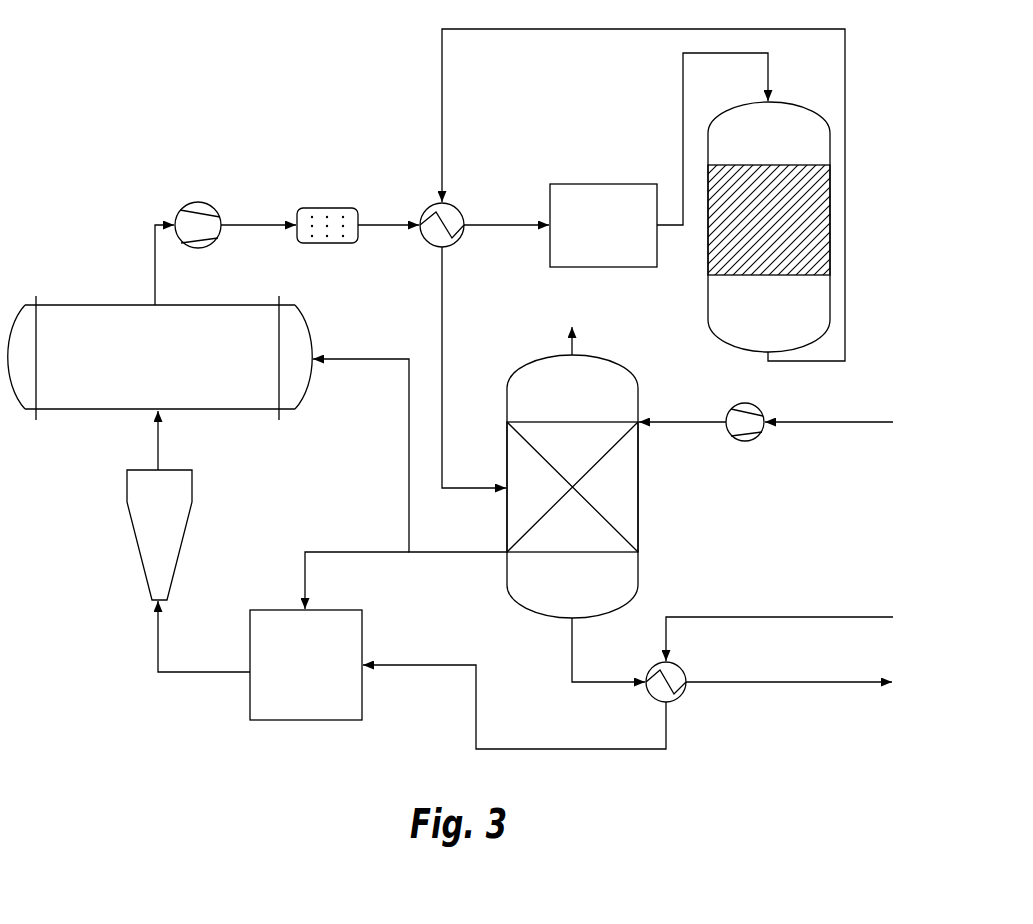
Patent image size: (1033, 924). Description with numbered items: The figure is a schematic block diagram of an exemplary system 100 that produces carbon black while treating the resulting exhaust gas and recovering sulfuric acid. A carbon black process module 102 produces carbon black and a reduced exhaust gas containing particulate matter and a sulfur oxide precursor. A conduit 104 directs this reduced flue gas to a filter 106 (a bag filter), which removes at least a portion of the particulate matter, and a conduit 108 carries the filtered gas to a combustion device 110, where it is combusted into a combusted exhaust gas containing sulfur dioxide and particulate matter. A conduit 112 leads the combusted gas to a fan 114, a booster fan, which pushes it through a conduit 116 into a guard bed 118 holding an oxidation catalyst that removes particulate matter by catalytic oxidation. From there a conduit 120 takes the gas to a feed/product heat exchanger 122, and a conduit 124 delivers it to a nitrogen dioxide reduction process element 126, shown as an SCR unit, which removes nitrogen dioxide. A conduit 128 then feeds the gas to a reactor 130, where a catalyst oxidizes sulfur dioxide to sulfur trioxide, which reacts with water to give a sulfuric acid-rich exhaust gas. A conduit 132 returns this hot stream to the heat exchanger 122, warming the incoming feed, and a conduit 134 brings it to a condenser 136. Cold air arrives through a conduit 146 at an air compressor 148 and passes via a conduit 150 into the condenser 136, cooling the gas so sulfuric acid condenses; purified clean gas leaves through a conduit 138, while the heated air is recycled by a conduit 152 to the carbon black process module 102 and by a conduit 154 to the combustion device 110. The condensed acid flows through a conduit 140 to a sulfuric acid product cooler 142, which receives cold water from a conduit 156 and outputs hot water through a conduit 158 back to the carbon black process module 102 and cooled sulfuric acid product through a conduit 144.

The system 100 is at (146, 64).
The carbon black process module 102 is at (300, 720).
The conduit 104 is at (212, 672).
The filter 106 is at (132, 527).
The conduit 108 is at (155, 440).
The combustion device 110 is at (233, 410).
The conduit 112 is at (155, 268).
The fan 114 is at (197, 201).
The conduit 116 is at (252, 223).
The guard bed 118 is at (320, 244).
The conduit 120 is at (383, 223).
The heat exchanger 122 is at (453, 206).
The conduit 124 is at (520, 223).
The nitrogen dioxide reduction process element 126 is at (577, 184).
The conduit 128 is at (682, 85).
The reactor 130 is at (708, 293).
The conduit 132 is at (441, 67).
The conduit 134 is at (441, 315).
The condenser 136 is at (638, 530).
The conduit 138 is at (571, 345).
The conduit 140 is at (572, 640).
The sulfuric acid product cooler 142 is at (647, 695).
The conduit 144 is at (807, 685).
The conduit 146 is at (842, 423).
The air compressor 148 is at (735, 403).
The conduit 150 is at (665, 423).
The conduit 152 is at (321, 551).
The conduit 154 is at (408, 445).
The conduit 156 is at (772, 616).
The conduit 158 is at (411, 670).